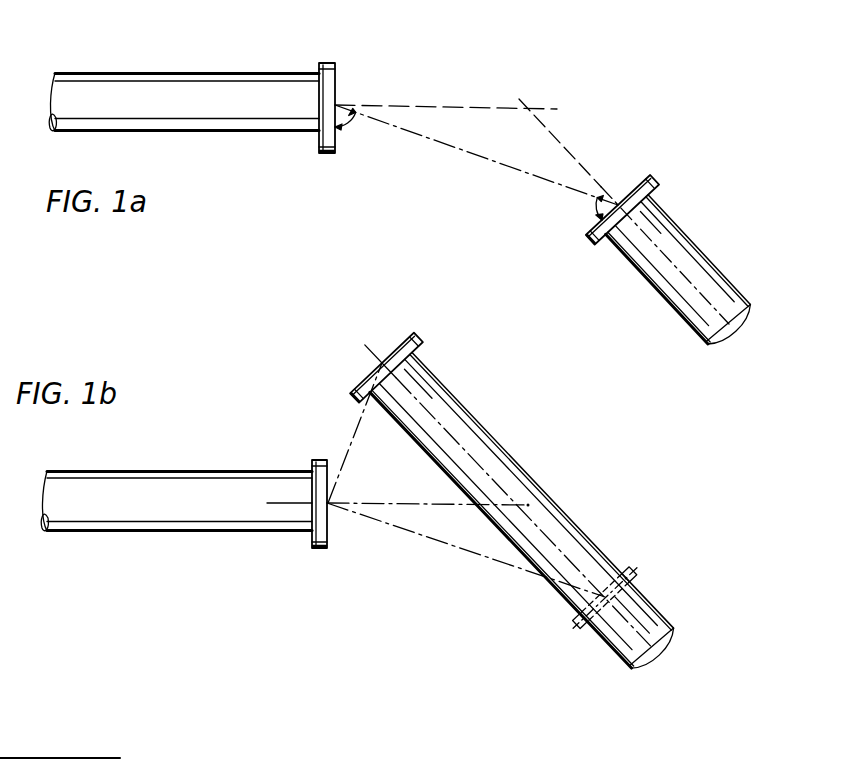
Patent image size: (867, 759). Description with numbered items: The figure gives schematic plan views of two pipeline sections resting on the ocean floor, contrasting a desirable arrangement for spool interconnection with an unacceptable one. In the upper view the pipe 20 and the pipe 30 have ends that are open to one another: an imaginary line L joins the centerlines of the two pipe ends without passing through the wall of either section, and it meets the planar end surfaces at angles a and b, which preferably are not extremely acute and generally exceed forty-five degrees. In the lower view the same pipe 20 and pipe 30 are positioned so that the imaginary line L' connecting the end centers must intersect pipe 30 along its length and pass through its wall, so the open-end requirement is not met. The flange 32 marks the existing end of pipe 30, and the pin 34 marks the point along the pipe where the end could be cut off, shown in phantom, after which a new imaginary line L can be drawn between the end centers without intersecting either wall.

In FIG. 1a, the pipe 20 is at (210, 80).
In FIG. 1b, the pipe 20 is at (227, 473).
In FIG. 1a, the pipe 30 is at (677, 232).
In FIG. 1b, the pipe 30 is at (493, 433).
In FIG. 1b, the flange of second tube 32 is at (392, 348).
In FIG. 1b, the pin 34 is at (637, 565).
In FIG. 1a, the imaginary line L is at (476, 155).
In FIG. 1b, the imaginary line L is at (466, 550).
In FIG. 1b, the imaginary line L' is at (356, 433).
In FIG. 1a, the angle a is at (584, 212).
In FIG. 1a, the angle b is at (349, 132).